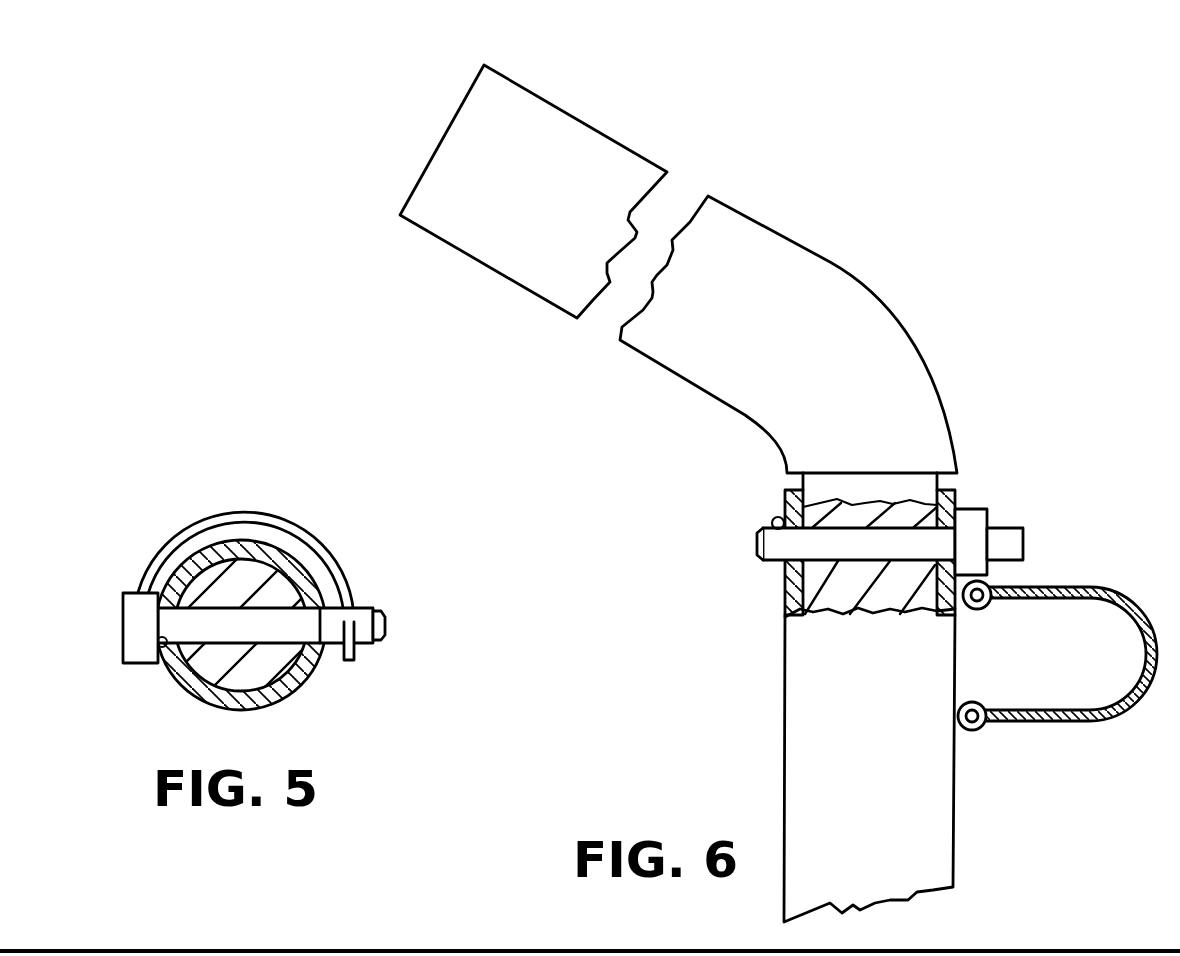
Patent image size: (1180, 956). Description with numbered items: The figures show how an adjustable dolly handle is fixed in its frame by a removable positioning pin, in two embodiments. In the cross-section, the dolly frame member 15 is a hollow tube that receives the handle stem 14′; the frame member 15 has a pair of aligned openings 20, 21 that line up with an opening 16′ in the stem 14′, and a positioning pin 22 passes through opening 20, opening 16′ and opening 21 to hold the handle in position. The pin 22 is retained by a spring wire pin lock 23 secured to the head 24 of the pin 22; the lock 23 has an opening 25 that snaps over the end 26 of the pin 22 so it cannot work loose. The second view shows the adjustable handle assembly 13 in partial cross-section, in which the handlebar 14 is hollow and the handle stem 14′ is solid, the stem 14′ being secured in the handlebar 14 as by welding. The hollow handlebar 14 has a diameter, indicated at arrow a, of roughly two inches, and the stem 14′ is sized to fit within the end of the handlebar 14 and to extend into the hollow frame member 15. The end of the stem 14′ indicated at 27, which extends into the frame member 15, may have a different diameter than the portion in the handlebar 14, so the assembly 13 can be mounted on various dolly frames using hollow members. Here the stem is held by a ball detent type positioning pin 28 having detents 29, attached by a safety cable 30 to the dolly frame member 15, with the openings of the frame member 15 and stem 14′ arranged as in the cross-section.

In FIG. 6, the adjustable handle assembly 13 is at (678, 450).
In FIG. 6, the handlebar 14 is at (580, 117).
In FIG. 5, the handle stem 14′ is at (266, 665).
In FIG. 6, the handle stem 14′ is at (787, 620).
In FIG. 5, the dolly frame member 15 is at (192, 690).
In FIG. 6, the dolly frame member 15 is at (785, 723).
In FIG. 5, the opening 16′ is at (228, 646).
In FIG. 6, the opening 16′ is at (851, 563).
In FIG. 5, the opening 20 is at (158, 642).
In FIG. 6, the opening 20 is at (933, 563).
In FIG. 5, the opening 21 is at (310, 592).
In FIG. 6, the opening 21 is at (776, 564).
In FIG. 5, the positioning pin 22 is at (362, 620).
In FIG. 5, the spring wire pin lock 23 is at (245, 512).
In FIG. 5, the head 24 is at (123, 620).
In FIG. 5, the opening 25 is at (354, 660).
In FIG. 5, the end 26 is at (383, 633).
In FIG. 6, the end of stem 27 is at (900, 485).
In FIG. 6, the ball detent type positioning pin 28 is at (1005, 528).
In FIG. 6, the detents 29 is at (773, 518).
In FIG. 6, the safety cable 30 is at (1132, 638).
In FIG. 6, the arrow a (handlebar diameter) a is at (478, 62).